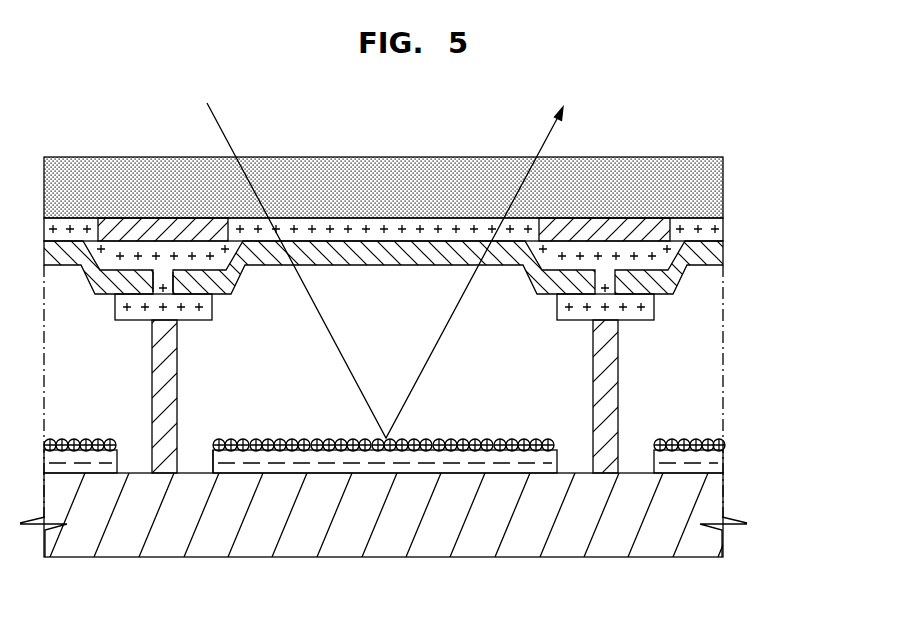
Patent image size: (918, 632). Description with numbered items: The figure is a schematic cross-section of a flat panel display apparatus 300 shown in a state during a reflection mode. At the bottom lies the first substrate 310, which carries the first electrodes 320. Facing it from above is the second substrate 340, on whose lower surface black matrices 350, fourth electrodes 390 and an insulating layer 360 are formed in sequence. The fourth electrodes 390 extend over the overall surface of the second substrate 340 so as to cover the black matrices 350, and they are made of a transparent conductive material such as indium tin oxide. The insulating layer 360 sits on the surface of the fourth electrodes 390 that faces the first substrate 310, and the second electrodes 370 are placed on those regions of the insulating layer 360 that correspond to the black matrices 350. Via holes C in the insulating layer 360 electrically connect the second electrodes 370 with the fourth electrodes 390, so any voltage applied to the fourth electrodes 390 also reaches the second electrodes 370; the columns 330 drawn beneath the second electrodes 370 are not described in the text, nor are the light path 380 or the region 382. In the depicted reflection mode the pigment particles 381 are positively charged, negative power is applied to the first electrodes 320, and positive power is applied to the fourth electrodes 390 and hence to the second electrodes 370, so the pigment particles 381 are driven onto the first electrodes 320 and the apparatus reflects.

The flat panel display apparatus 300 is at (712, 133).
The first substrate 310 is at (713, 497).
The first electrodes 320 is at (710, 463).
The through electrode 330 is at (605, 378).
The second substrate 340 is at (712, 183).
The black matrices 350 is at (167, 238).
The insulating layer 360 is at (712, 257).
The second electrodes 370 is at (640, 308).
The incident light 380 is at (386, 350).
The pigment particles 381 is at (237, 447).
The second region 382 is at (330, 415).
The fourth electrodes 390 is at (723, 229).
The via holes C is at (163, 277).